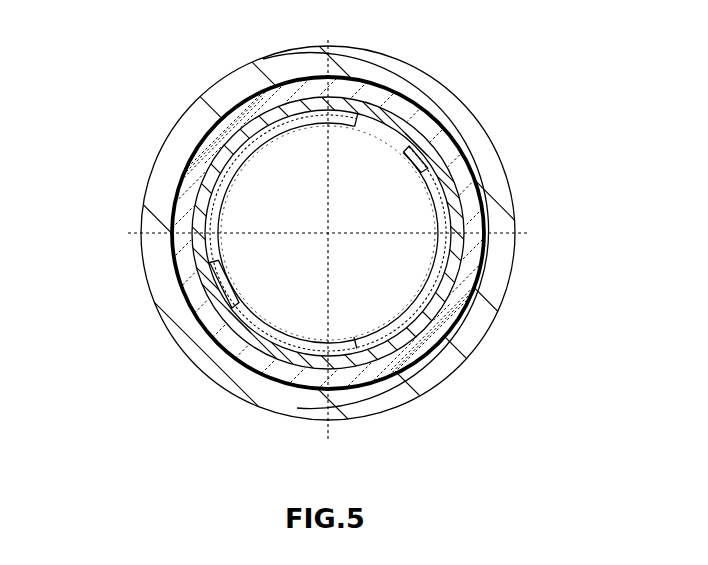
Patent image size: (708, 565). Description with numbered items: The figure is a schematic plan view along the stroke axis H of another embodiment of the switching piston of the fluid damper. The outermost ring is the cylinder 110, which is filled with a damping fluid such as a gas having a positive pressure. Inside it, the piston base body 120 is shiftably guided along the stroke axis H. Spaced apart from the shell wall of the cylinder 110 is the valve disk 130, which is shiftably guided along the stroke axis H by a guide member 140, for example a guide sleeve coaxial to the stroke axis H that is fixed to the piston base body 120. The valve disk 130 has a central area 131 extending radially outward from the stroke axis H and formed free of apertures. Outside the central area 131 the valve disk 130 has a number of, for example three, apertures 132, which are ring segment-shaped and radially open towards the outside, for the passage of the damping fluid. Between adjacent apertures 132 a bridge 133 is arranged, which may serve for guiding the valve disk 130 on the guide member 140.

The cylinder 110 is at (150, 276).
The piston base body 120 is at (182, 176).
The valve disk 130 is at (447, 231).
The central area 131 is at (390, 268).
The apertures 132 is at (441, 175).
The bridge 133 is at (398, 128).
The guide member 140 is at (202, 289).
The stroke axis H is at (328, 233).